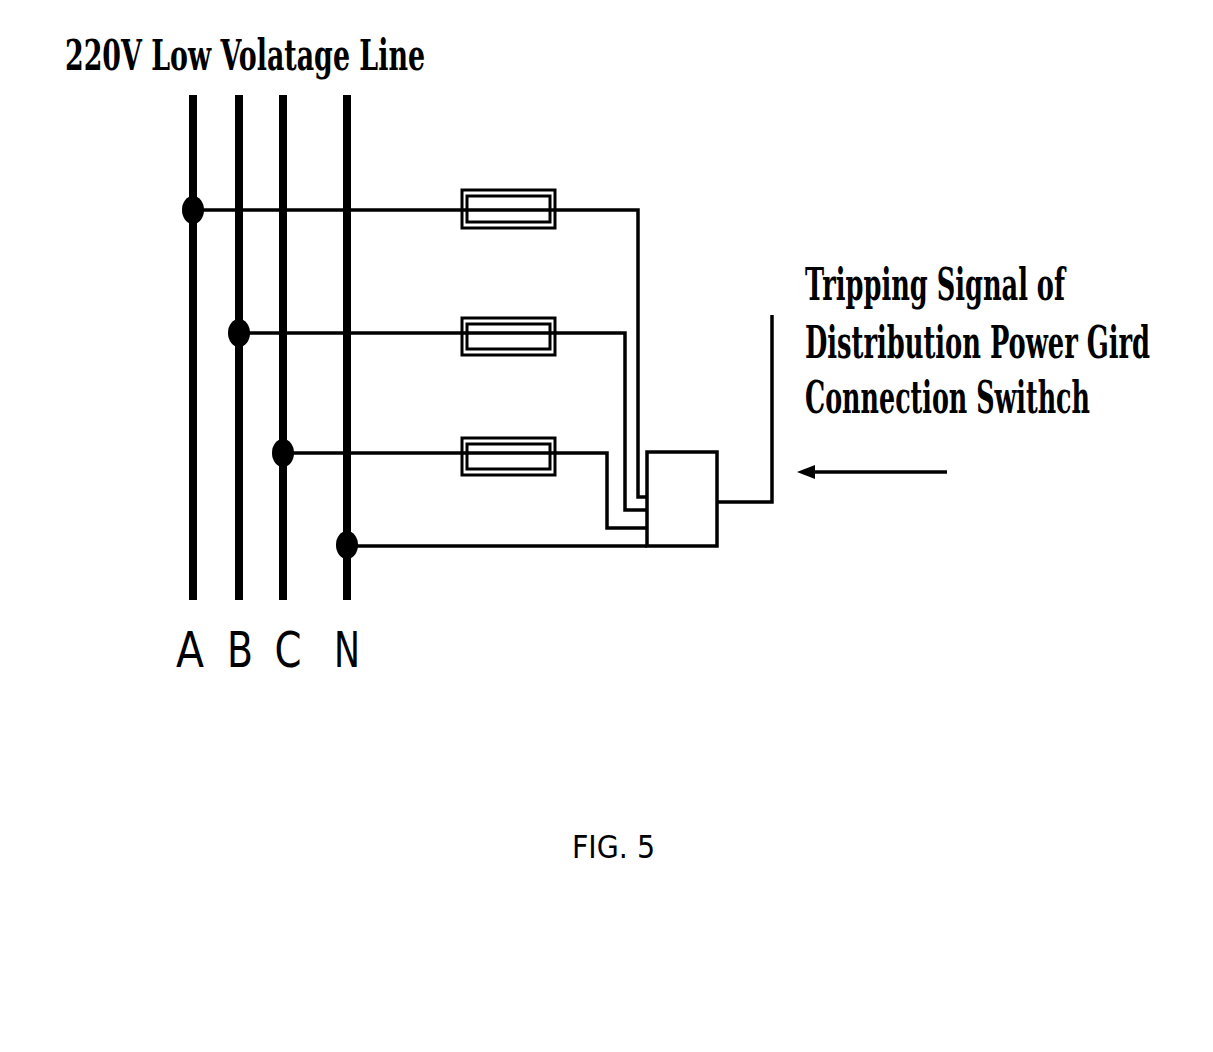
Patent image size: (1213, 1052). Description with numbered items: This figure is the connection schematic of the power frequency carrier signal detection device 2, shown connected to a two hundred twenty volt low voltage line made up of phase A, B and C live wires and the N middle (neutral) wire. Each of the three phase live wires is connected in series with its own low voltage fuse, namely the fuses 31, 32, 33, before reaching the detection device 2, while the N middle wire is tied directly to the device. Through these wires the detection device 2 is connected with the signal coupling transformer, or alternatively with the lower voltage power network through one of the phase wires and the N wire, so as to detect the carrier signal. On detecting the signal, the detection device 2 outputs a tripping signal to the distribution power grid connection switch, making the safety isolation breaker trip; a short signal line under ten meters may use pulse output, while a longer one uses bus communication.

The power frequency carrier signal detection device 2 is at (725, 570).
The low voltage fuse 31 is at (486, 178).
The low voltage fuse 32 is at (537, 312).
The low voltage fuse 33 is at (535, 412).